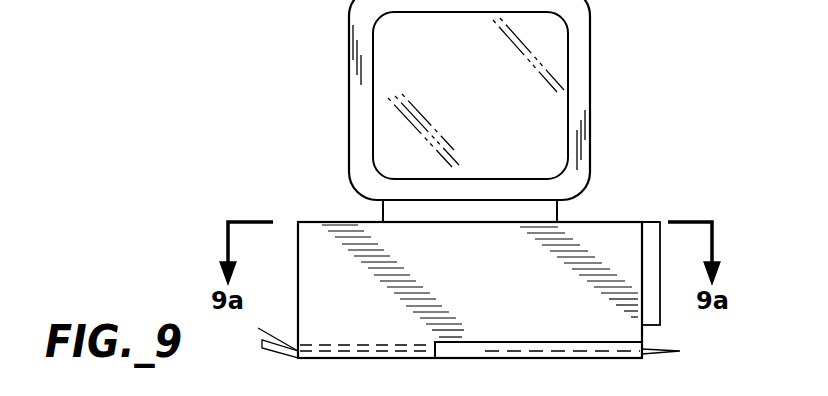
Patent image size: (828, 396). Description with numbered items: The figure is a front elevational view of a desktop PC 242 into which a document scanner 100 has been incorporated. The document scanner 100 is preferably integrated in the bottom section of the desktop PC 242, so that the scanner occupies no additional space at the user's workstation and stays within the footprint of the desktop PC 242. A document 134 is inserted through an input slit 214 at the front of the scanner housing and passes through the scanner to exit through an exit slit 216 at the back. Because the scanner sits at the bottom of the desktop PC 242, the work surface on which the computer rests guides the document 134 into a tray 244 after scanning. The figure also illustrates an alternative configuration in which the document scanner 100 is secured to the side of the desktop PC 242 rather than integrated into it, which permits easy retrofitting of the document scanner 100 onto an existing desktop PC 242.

The document scanner 100 is at (552, 359).
The document 134 is at (665, 352).
The input slit 214 is at (645, 358).
The exit slit 216 is at (434, 345).
The desktop PC 242 is at (590, 222).
The tray 244 is at (262, 350).